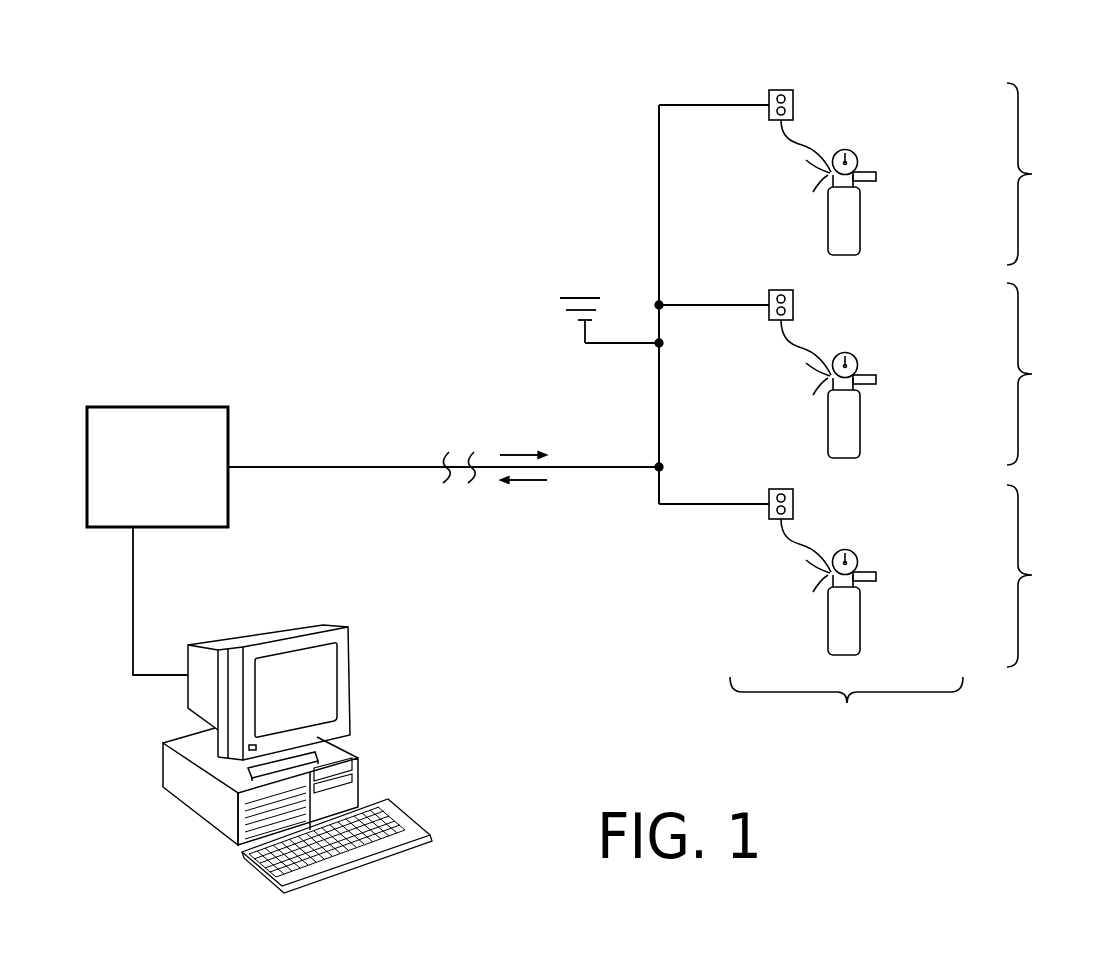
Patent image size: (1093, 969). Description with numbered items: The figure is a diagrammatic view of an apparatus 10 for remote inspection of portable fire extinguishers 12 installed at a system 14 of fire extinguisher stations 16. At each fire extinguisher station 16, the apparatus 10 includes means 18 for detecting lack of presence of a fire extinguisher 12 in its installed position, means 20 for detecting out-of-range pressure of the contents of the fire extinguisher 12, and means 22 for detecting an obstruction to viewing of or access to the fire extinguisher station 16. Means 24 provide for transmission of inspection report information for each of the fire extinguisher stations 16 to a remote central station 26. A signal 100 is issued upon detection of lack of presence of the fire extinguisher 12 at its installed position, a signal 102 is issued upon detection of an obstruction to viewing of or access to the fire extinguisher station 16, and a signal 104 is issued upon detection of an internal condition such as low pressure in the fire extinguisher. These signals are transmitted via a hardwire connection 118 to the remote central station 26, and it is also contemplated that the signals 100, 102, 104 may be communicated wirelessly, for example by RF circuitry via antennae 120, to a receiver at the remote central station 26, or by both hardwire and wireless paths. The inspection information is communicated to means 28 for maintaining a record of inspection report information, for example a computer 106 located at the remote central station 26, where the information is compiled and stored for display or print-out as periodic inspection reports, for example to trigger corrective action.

The apparatus 10 is at (382, 272).
The portable fire extinguisher 12 is at (852, 217).
The system of fire extinguisher stations 14 is at (846, 710).
The fire extinguisher station 16 is at (1037, 375).
The means for detecting lack of presence of a fire extinguisher 18 is at (819, 141).
The means for detecting out-of-range pressure 20 is at (873, 157).
The means for detecting an obstruction 22 is at (771, 77).
The means for transmission of inspection report information 24 is at (648, 205).
The remote central station 26 is at (173, 407).
The means for maintaining a record of inspection report information 28 is at (332, 608).
The signal 100 is at (525, 485).
The signal 102 is at (523, 480).
The signal 104 is at (523, 467).
The computer 106 is at (195, 795).
The hardwire connection 118 is at (320, 467).
The antennae 120 is at (582, 331).